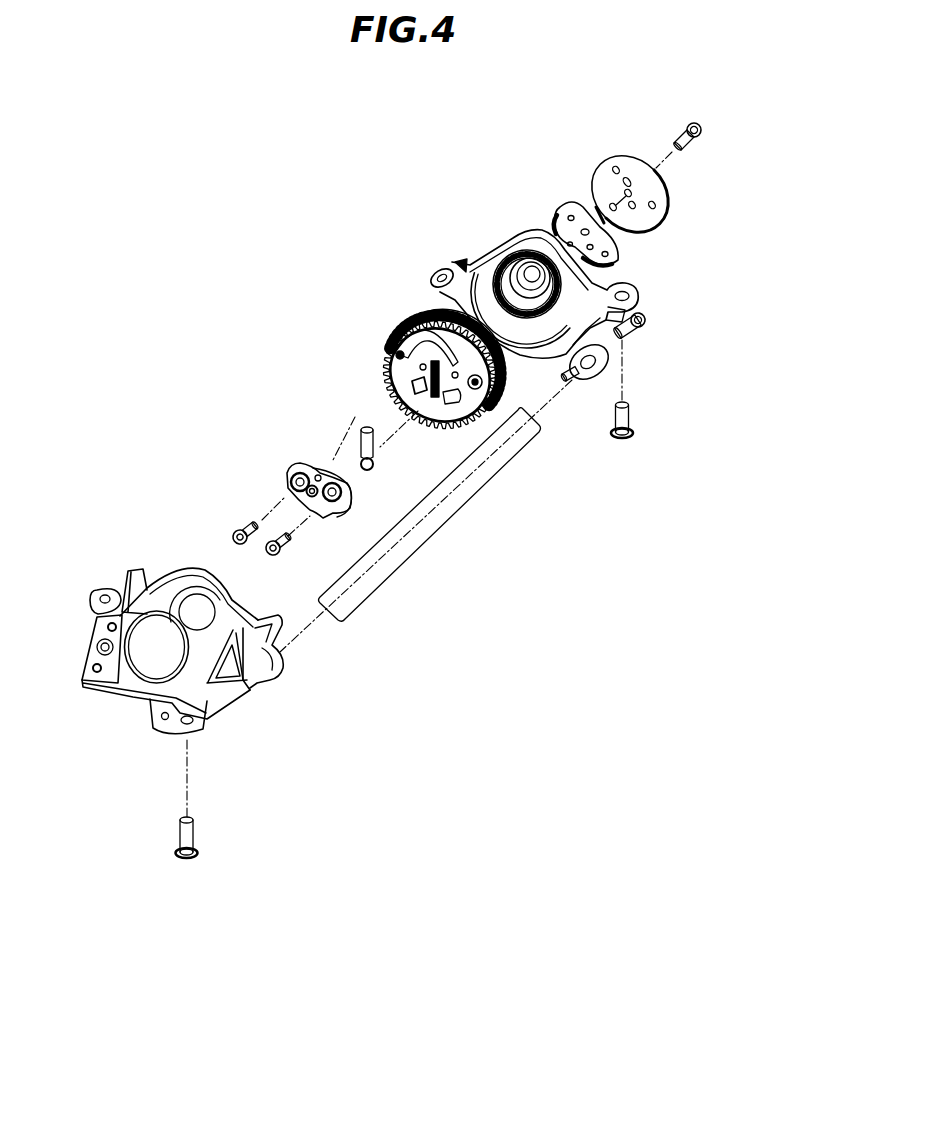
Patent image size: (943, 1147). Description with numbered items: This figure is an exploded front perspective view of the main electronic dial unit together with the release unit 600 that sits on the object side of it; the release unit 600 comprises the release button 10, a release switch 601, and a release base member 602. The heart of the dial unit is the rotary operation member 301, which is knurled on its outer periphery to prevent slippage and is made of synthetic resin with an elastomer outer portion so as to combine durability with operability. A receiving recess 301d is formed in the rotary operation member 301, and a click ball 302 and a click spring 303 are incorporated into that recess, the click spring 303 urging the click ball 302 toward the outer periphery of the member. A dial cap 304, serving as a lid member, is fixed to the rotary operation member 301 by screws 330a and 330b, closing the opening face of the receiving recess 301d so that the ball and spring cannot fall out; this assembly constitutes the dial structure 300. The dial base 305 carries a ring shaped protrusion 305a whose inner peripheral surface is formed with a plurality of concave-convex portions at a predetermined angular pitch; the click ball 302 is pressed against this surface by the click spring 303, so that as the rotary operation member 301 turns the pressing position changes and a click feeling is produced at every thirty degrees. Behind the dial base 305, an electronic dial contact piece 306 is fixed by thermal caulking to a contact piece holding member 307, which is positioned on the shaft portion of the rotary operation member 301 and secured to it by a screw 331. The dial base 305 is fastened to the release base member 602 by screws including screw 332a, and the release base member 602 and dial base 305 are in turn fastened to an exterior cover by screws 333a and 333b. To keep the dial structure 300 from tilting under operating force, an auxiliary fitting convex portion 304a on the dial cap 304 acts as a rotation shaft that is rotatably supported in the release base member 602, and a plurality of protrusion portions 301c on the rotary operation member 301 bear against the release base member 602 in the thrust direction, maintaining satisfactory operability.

The release button 10 is at (148, 663).
The dial structure 300 is at (430, 533).
The rotary operation member 301 is at (412, 305).
The protrusion portions 301c is at (446, 386).
The receiving recess 301d is at (437, 400).
The click ball 302 is at (374, 466).
The click spring 303 is at (366, 425).
The dial cap 304 is at (320, 516).
The auxiliary fitting convex portion 304a is at (300, 470).
The dial base 305 is at (458, 262).
The ring shaped protrusion 305a is at (535, 338).
The electronic dial contact piece 306 is at (572, 202).
The contact piece holding member 307 is at (606, 165).
The screw 330a is at (235, 531).
The screw 330b is at (293, 558).
The screw 331 is at (680, 130).
The screw 332a is at (635, 334).
The screw 333a is at (185, 860).
The screw 333b is at (621, 441).
The release unit 600 is at (133, 589).
The release switch 601 is at (192, 681).
The release base member 602 is at (266, 667).